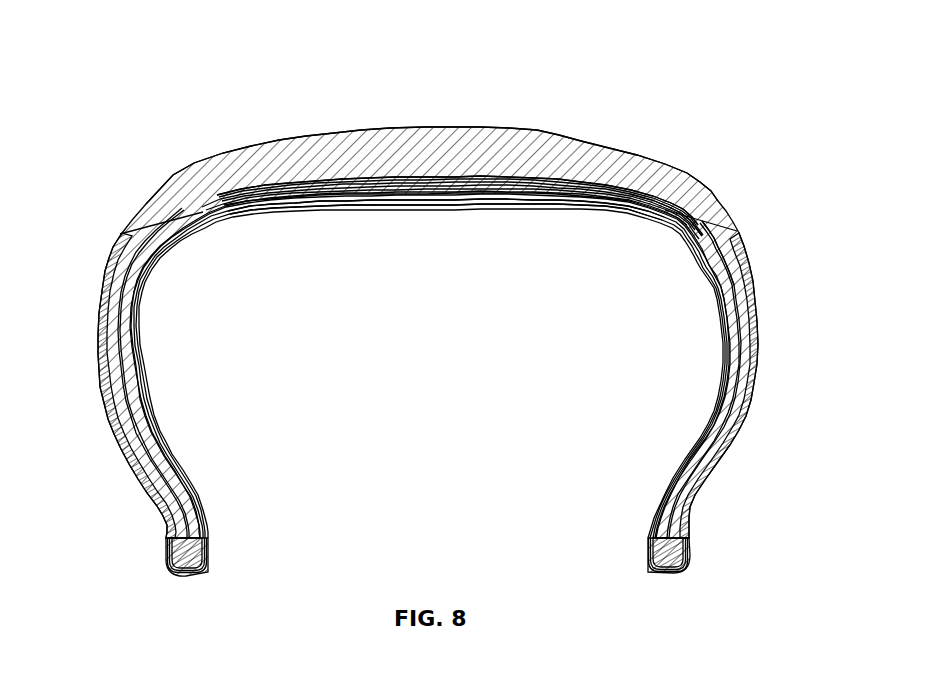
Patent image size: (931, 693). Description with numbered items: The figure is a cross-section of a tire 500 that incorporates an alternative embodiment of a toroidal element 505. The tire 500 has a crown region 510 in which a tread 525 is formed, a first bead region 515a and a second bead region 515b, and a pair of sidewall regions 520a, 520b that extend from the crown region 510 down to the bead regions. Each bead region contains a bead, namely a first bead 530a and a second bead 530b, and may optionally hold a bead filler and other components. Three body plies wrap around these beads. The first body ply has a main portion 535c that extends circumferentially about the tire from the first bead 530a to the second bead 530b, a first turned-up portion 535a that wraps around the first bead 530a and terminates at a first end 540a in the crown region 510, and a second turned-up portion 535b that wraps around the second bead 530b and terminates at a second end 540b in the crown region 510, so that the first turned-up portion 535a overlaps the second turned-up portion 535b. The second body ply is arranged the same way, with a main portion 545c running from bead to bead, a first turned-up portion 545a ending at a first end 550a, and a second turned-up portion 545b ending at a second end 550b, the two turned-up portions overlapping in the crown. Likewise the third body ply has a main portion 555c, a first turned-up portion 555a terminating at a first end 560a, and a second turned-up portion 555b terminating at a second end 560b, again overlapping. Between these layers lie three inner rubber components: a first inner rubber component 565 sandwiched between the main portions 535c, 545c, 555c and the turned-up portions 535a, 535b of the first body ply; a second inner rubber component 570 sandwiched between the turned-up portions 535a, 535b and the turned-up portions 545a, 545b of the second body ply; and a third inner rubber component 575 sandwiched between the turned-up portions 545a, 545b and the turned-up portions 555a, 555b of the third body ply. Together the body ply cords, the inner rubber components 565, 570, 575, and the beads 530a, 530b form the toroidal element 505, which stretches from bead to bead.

The tire 500 is at (140, 55).
The toroidal element 505 is at (725, 247).
The crown region 510 is at (765, 155).
The first bead region 515a is at (765, 513).
The second bead region 515b is at (95, 513).
The sidewall region 520a is at (765, 235).
The sidewall region 520b is at (95, 235).
The tread 525 is at (470, 129).
The first bead 530a is at (680, 565).
The second bead 530b is at (178, 561).
The first turned-up portion of the first body ply 535a is at (593, 211).
The second turned-up portion of the first body ply 535b is at (270, 211).
The main portion of the first body ply 535c is at (223, 229).
The first end of the first body ply 540a is at (320, 207).
The second end of the first body ply 540b is at (550, 196).
The first turned-up portion of the second body ply 545a is at (590, 204).
The second turned-up portion of the second body ply 545b is at (263, 187).
The main portion of the second body ply 545c is at (173, 254).
The first end of the second body ply 550a is at (310, 192).
The second end of the second body ply 550b is at (548, 188).
The first turned-up portion of the third body ply 555a is at (620, 200).
The second turned-up portion of the third body ply 555b is at (203, 206).
The main portion of the third body ply 555c is at (424, 203).
The first end of the third body ply 560a is at (293, 193).
The second end of the third body ply 560b is at (567, 190).
The first inner rubber component 565 is at (698, 257).
The second inner rubber component 570 is at (662, 217).
The third inner rubber component 575 is at (702, 220).